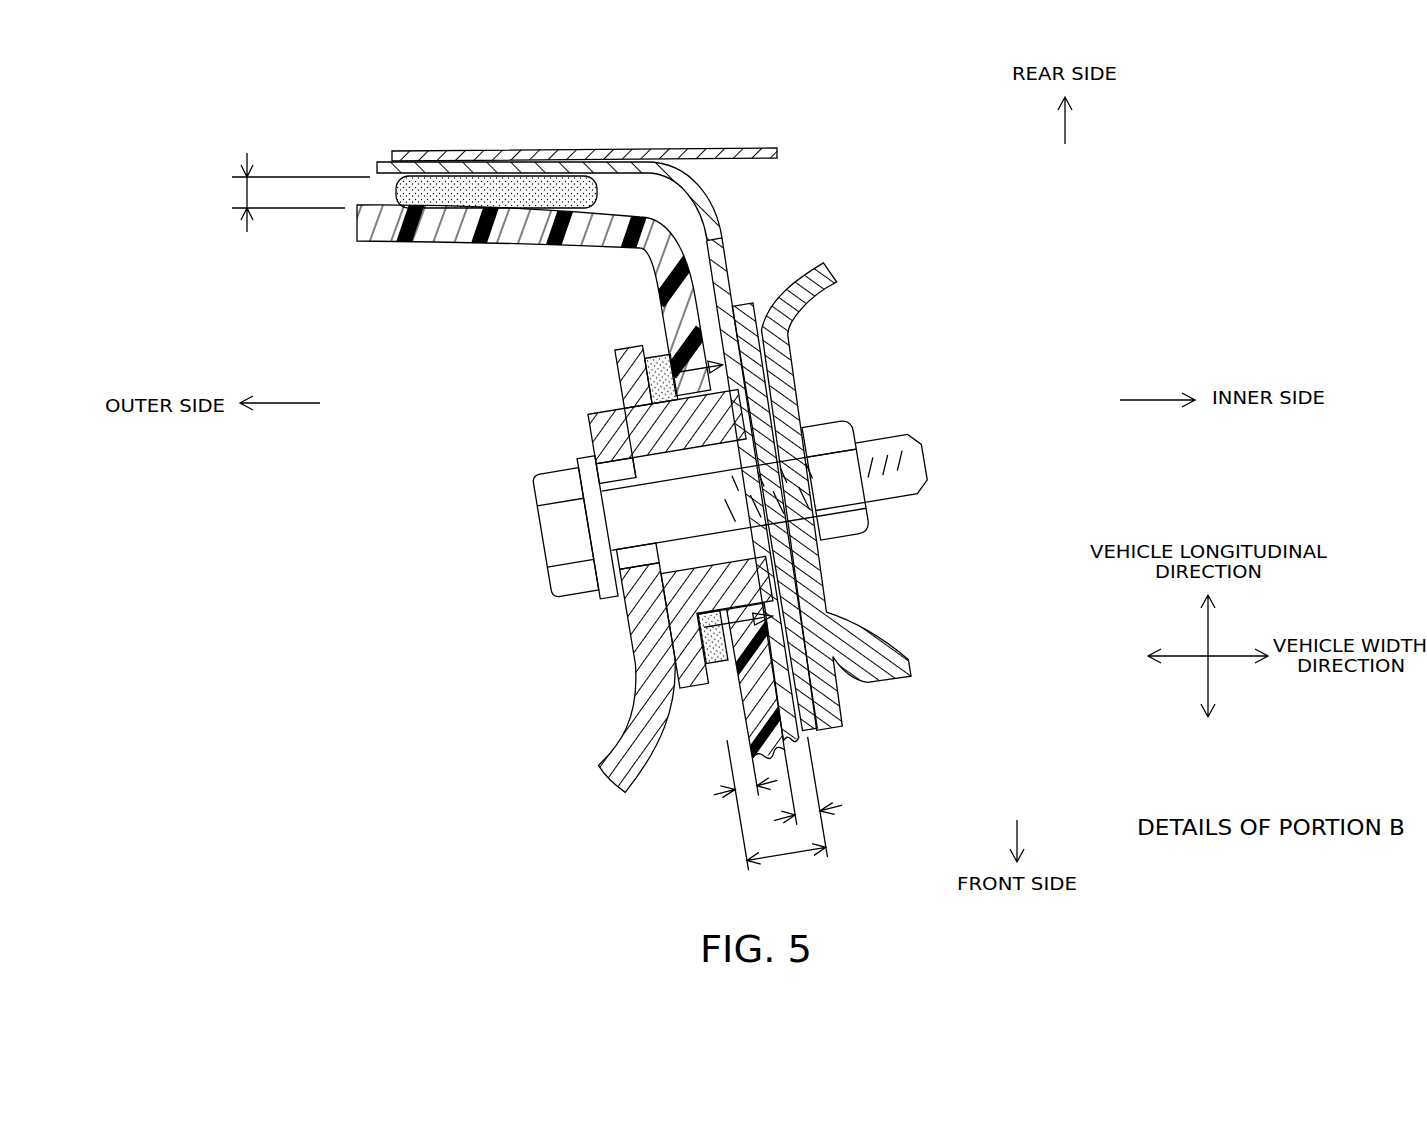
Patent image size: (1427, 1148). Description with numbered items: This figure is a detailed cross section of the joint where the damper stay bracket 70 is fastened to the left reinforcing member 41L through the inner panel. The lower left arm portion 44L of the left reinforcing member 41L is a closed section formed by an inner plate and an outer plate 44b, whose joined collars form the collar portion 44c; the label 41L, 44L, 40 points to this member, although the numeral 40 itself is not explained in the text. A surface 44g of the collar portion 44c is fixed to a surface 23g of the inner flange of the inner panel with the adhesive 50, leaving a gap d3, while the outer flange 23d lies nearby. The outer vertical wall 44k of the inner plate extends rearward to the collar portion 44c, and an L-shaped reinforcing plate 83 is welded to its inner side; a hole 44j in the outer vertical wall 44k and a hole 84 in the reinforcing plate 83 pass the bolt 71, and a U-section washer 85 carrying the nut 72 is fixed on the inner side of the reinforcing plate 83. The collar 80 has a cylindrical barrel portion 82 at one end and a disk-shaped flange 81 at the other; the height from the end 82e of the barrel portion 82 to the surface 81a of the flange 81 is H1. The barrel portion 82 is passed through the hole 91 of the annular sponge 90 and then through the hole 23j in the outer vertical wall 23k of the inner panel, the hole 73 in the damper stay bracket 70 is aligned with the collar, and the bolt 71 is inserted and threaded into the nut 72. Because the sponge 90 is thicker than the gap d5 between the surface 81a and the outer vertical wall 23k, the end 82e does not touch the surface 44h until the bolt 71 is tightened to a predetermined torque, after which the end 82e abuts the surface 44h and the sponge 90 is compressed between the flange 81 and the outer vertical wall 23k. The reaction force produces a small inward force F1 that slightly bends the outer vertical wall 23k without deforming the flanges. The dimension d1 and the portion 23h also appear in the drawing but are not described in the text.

The collar portion 44c is at (455, 148).
The surface of the collar portion 44g is at (386, 186).
The outer plate 44b is at (722, 158).
The surface of the inner flange 23g is at (631, 213).
The adhesive 50 is at (544, 190).
The outer flange 23d is at (432, 250).
The gap d3 is at (245, 193).
The left reinforcing member 41L is at (811, 177).
The lower left arm portion 44L is at (811, 177).
The roof structure 40 is at (747, 208).
The outer vertical wall 44k is at (728, 260).
The surface of the outer vertical wall 44h is at (745, 305).
The end of the barrel portion 82e is at (793, 378).
The washer 85 is at (910, 665).
The reinforcing plate 83 is at (843, 695).
The hole 84 is at (843, 590).
The nut 72 is at (837, 415).
The hole 44j is at (868, 528).
The bolt 71 is at (542, 574).
The hole 73 is at (608, 600).
The barrel portion 82 is at (562, 411).
The collar 80 is at (597, 377).
The flange 81 is at (612, 350).
The sponge 90 is at (648, 357).
The force F1 is at (655, 352).
The damper stay bracket 70 is at (625, 742).
The hole 23j is at (650, 618).
The surface of the flange 81a is at (700, 690).
The hole 91 is at (698, 650).
The pillar panel lower wall 23h is at (795, 756).
The gap d5 is at (737, 783).
The gap dimension d1 is at (826, 810).
The height H1 is at (789, 868).
The outer vertical wall 23k is at (718, 745).